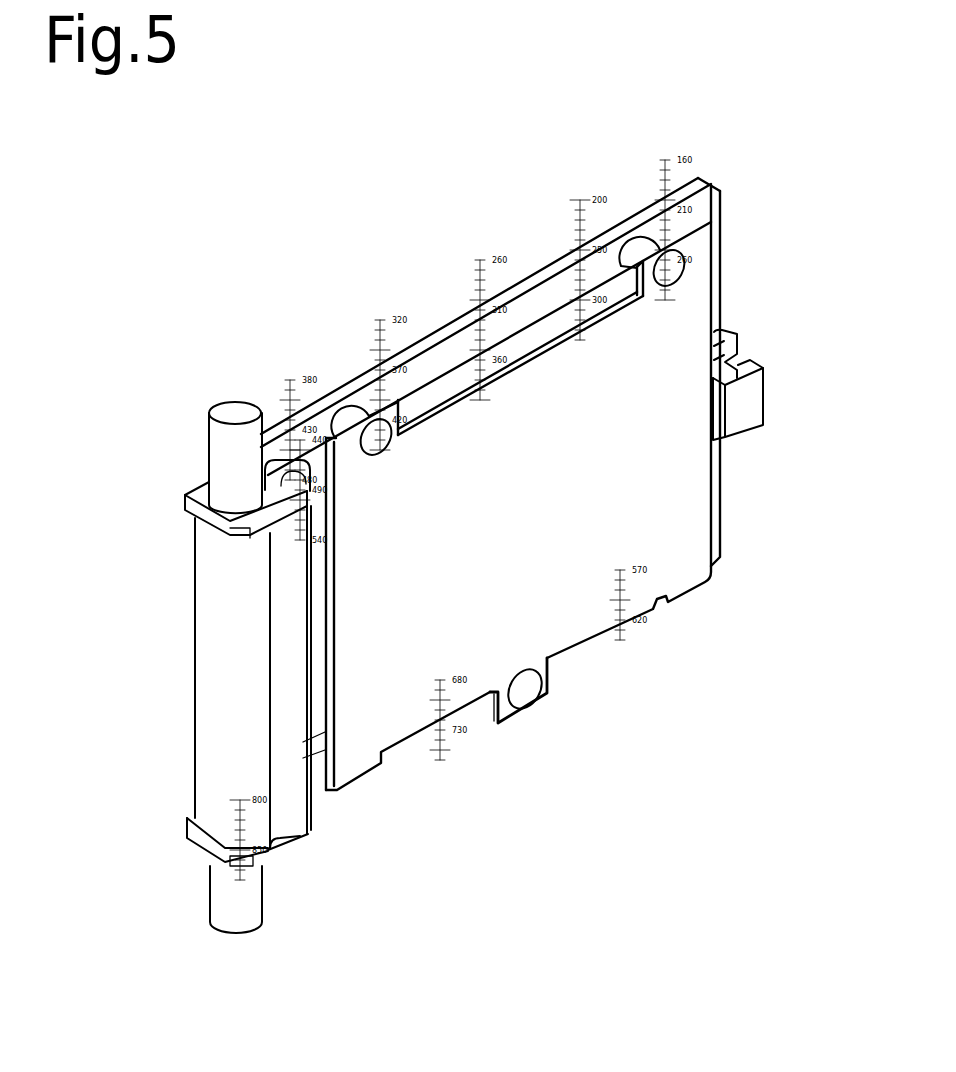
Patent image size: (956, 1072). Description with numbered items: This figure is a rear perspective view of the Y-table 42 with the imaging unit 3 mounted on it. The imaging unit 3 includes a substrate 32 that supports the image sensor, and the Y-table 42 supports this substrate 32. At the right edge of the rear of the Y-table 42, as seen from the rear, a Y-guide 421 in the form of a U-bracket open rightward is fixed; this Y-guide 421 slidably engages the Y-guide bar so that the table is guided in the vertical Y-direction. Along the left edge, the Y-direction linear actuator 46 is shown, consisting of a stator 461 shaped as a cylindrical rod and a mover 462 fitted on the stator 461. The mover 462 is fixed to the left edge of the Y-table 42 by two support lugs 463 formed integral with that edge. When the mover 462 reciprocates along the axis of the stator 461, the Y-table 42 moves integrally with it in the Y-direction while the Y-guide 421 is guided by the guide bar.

The imaging unit 3 is at (523, 504).
The substrate 32 is at (435, 705).
The Y-table 42 is at (423, 347).
The Y-guide 421 is at (747, 414).
The Y-direction linear actuator 46 is at (250, 641).
The stator 461 is at (244, 922).
The mover 462 is at (212, 752).
The support lugs 463 is at (303, 462).